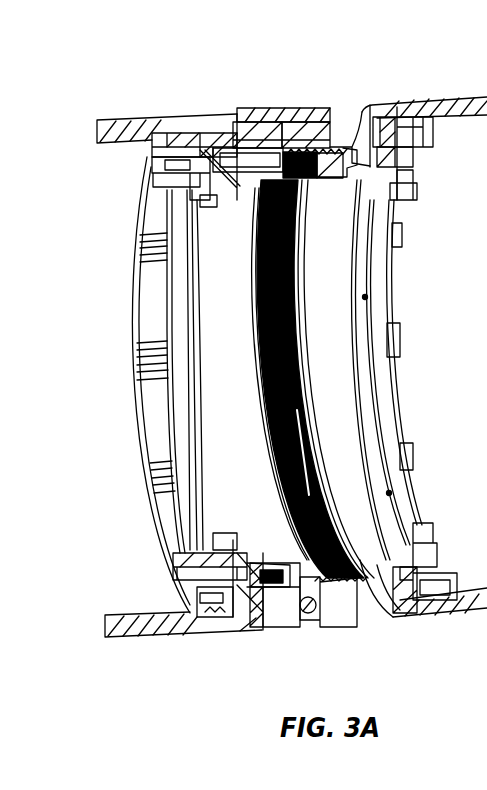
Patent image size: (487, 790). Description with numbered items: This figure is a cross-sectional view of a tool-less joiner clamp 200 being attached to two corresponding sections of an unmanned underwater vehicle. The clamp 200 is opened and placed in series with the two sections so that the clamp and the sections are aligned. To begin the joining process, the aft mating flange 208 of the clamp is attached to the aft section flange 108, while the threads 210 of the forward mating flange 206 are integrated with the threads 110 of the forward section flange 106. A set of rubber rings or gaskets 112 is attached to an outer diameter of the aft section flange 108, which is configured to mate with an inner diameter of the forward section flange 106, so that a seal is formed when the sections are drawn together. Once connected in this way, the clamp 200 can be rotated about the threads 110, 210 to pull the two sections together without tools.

The tool-less joiner clamp 200 is at (302, 82).
The aft mating flange 208 is at (224, 122).
The forward mating flange 206 is at (336, 147).
The threads 110 is at (410, 118).
The threads 210 is at (247, 200).
The rubber rings or gaskets 112 is at (313, 183).
The forward section flange 106 is at (333, 366).
The aft section flange 108 is at (220, 377).